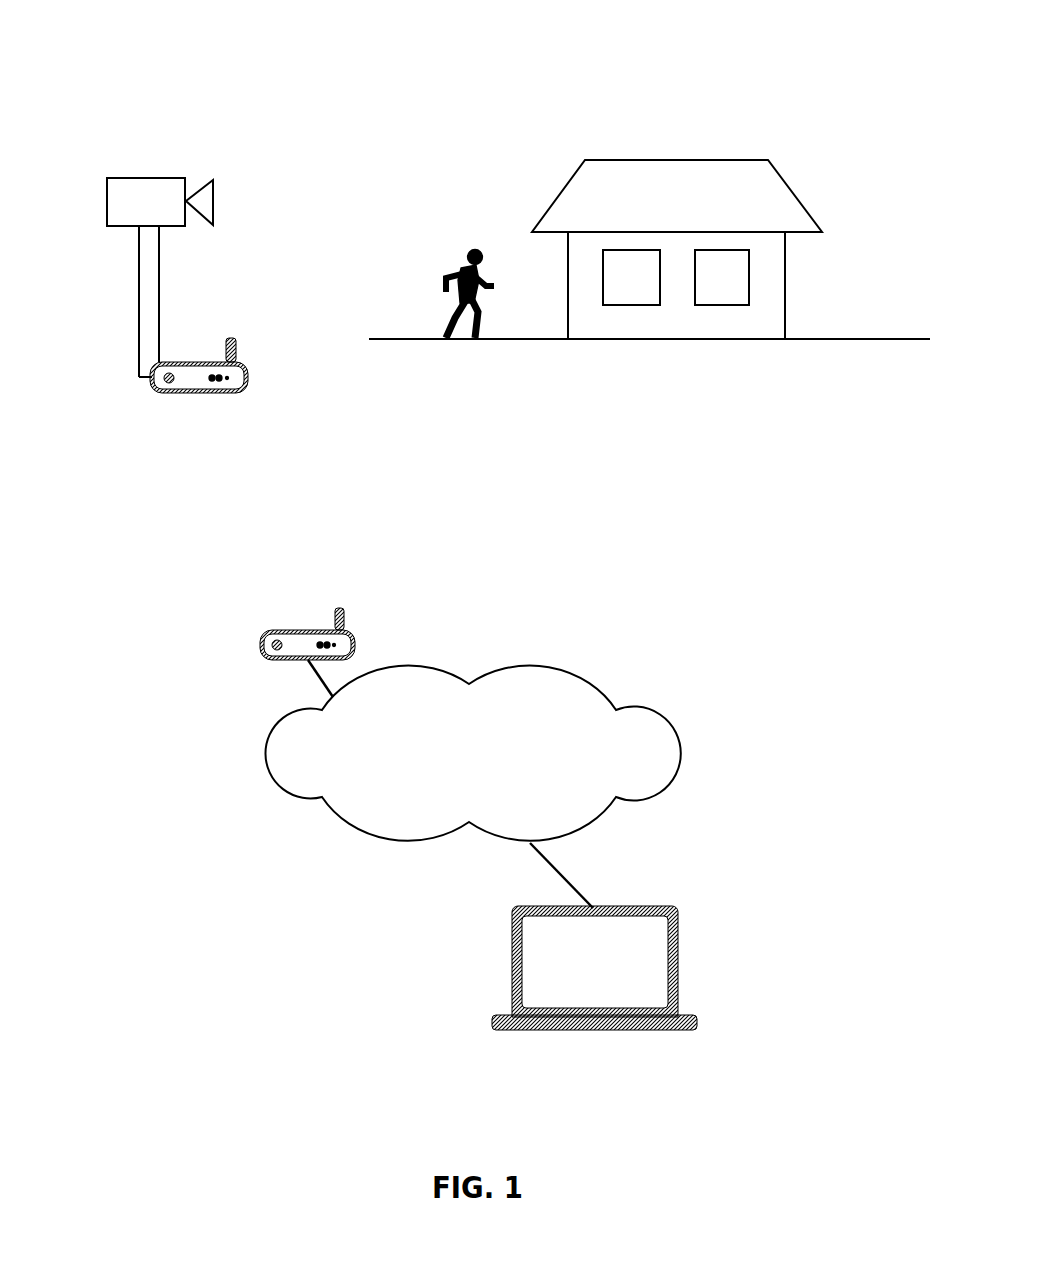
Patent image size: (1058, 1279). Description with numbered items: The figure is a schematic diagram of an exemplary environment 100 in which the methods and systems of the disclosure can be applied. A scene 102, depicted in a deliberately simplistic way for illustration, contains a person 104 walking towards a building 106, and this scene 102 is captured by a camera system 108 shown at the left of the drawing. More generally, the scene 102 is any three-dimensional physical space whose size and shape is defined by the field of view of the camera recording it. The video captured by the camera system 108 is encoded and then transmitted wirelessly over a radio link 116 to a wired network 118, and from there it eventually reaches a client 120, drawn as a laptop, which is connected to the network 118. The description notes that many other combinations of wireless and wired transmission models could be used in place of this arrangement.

The environment 100 is at (83, 42).
The scene 102 is at (860, 118).
The person 104 is at (427, 287).
The building 106 is at (785, 268).
The camera system 108 is at (147, 180).
The radio link 116 is at (294, 562).
The wired network 118 is at (535, 766).
The client 120 is at (700, 941).